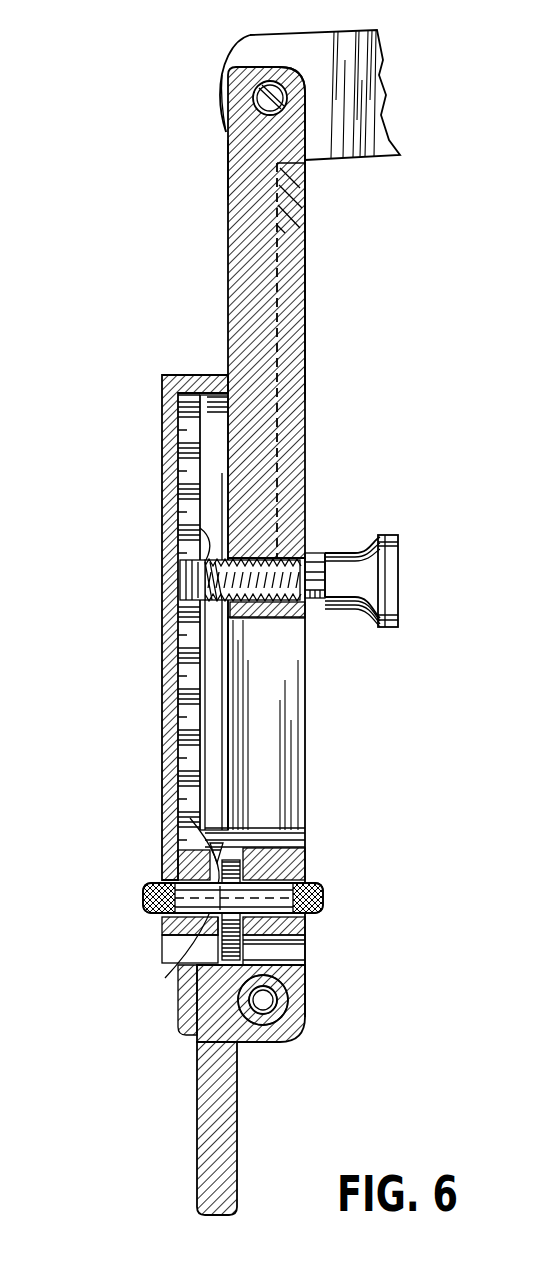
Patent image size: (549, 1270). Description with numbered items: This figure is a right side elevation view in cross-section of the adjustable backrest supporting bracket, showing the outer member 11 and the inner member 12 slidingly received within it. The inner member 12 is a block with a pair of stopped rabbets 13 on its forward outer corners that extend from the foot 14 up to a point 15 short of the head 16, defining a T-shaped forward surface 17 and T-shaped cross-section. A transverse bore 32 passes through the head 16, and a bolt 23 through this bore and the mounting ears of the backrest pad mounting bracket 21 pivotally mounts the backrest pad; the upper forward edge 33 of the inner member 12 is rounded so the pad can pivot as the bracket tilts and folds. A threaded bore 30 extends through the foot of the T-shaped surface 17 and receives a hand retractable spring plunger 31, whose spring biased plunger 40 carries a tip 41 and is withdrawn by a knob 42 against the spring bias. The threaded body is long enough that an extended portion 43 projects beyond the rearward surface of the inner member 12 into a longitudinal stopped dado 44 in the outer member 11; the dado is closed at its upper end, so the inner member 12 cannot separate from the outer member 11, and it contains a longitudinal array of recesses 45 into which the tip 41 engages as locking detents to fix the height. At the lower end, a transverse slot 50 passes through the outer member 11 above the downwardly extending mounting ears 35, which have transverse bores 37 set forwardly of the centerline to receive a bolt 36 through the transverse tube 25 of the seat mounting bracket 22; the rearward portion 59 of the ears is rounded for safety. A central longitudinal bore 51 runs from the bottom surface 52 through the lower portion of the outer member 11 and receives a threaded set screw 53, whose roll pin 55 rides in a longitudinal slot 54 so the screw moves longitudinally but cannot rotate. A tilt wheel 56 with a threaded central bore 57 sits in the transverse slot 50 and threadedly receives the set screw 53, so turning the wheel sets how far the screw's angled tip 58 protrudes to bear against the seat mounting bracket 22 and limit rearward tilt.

The outer member 11 is at (158, 376).
The inner member 12 is at (223, 126).
The stopped rabbets 13 is at (305, 218).
The foot 14 is at (257, 620).
The point 15 is at (305, 190).
The head 16 is at (257, 65).
The T-shaped forward surface 17 is at (305, 245).
The backrest pad mounting bracket 21 is at (373, 40).
The seat mounting bracket 22 is at (232, 1105).
The bolt 23 is at (250, 115).
The transverse tube 25 is at (290, 1040).
The threaded bore 30 is at (305, 482).
The spring plunger 31 is at (341, 553).
The transverse bore 32 is at (252, 98).
The upper forward edge 33 is at (290, 64).
The mounting ears 35 is at (170, 945).
The bolt 36 is at (300, 1035).
The transverse bores 37 is at (262, 1030).
The plunger 40 is at (287, 620).
The tip 41 is at (183, 567).
The knob 42 is at (388, 553).
The extended portion 43 is at (200, 528).
The longitudinal stopped dado 44 is at (213, 421).
The recesses 45 is at (187, 505).
The transverse slot 50 is at (143, 895).
The central longitudinal bore 51 is at (305, 925).
The bottom surface 52 is at (205, 937).
The threaded set screw 53 is at (305, 945).
The longitudinal slot 54 is at (160, 812).
The roll pin 55 is at (160, 840).
The tilt wheel 56 is at (318, 875).
The threaded central bore 57 is at (323, 900).
The angled tip 58 is at (305, 968).
The rearward portion 59 is at (170, 978).